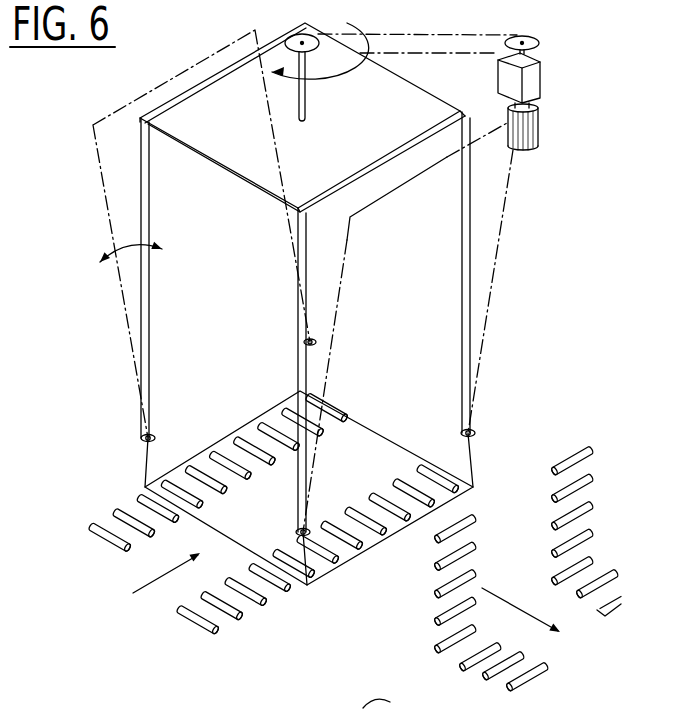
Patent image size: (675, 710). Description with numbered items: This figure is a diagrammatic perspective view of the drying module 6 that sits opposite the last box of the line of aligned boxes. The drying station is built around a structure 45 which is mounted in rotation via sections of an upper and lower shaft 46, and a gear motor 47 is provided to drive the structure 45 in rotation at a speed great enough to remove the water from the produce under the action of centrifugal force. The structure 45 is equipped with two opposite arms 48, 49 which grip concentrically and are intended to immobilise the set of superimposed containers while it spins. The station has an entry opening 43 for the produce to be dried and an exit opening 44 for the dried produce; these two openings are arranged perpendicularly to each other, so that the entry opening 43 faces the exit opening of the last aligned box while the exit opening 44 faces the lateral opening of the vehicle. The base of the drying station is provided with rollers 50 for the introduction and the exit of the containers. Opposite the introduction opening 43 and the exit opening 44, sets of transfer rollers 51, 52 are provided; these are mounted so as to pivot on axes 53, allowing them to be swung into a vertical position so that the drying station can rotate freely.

The apparatus 6 is at (115, 365).
The entry opening 43 is at (240, 520).
The exit opening 44 is at (440, 392).
The structure 45 is at (422, 110).
The upper and lower shaft 46 is at (306, 97).
The gear motor 47 is at (510, 122).
The arm 48 is at (497, 243).
The arm 49 is at (93, 150).
The rollers 50 is at (357, 547).
The transfer rollers 51 is at (228, 623).
The transfer rollers 52 is at (480, 683).
The axes 53 is at (437, 648).